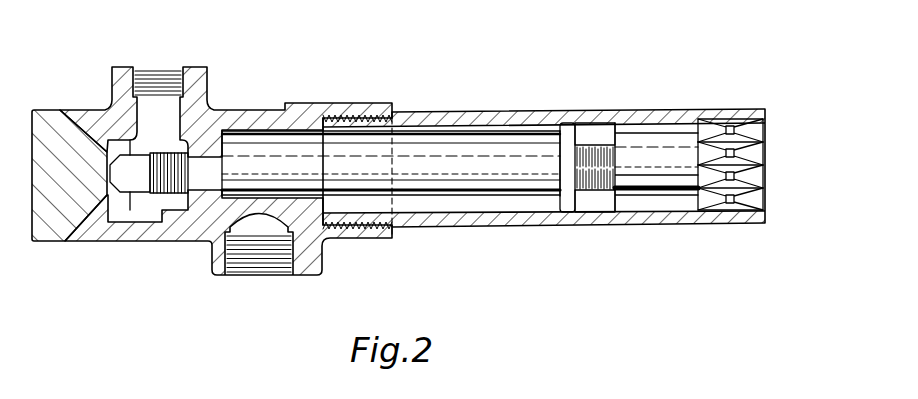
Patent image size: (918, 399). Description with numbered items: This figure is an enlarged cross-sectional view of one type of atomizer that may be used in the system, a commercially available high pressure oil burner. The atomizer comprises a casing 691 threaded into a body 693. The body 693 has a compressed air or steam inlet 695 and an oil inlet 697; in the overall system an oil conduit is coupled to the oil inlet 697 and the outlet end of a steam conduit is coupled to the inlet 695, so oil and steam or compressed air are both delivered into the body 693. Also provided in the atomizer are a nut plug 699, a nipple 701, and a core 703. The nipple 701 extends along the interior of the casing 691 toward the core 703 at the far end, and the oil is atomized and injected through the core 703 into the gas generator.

The casing 691 is at (645, 228).
The body 693 is at (336, 105).
The compressed air or steam inlet 695 is at (263, 278).
The oil inlet 697 is at (157, 66).
The nut plug 699 is at (163, 214).
The nipple 701 is at (519, 194).
The core 703 is at (766, 193).